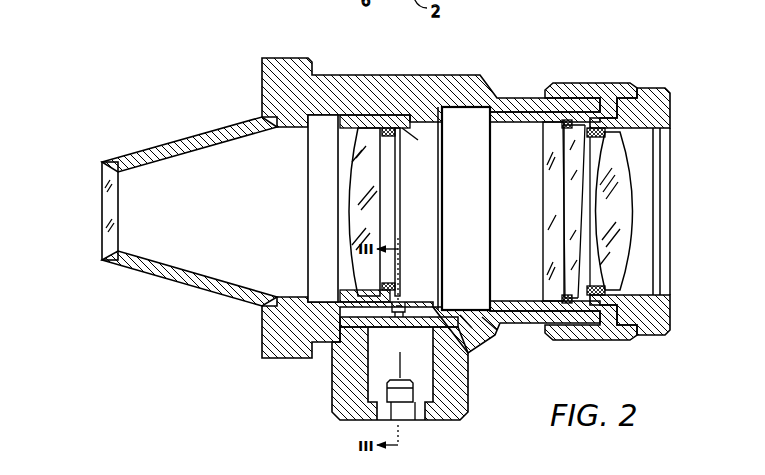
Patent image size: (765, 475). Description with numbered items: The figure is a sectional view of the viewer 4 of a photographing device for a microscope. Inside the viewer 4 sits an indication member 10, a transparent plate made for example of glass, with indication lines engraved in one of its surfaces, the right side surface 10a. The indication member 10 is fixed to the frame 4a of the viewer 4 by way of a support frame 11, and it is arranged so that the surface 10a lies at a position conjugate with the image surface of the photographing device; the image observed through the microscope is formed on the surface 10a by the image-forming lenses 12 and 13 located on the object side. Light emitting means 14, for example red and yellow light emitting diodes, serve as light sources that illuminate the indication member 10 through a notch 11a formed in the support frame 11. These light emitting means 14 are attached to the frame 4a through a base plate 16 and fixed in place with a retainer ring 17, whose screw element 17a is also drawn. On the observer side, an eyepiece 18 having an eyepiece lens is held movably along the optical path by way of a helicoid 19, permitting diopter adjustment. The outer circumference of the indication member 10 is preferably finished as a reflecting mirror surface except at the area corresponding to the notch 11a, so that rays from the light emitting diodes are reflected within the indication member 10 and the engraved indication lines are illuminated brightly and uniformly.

The viewer 4 is at (245, 58).
The frame of the viewer 4a is at (348, 80).
The image-forming lens 12 is at (106, 204).
The image-forming lens 13 is at (357, 180).
The support frame 11 is at (405, 120).
The notch 11a is at (390, 308).
The indication member 10 is at (400, 168).
The right side surface 10a is at (403, 205).
The helicoid 19 is at (557, 115).
The eyepiece 18 is at (657, 92).
The light emitting means 14 is at (397, 325).
The base plate 16 is at (457, 338).
The retainer ring 17 is at (469, 394).
The screw 17a is at (415, 416).